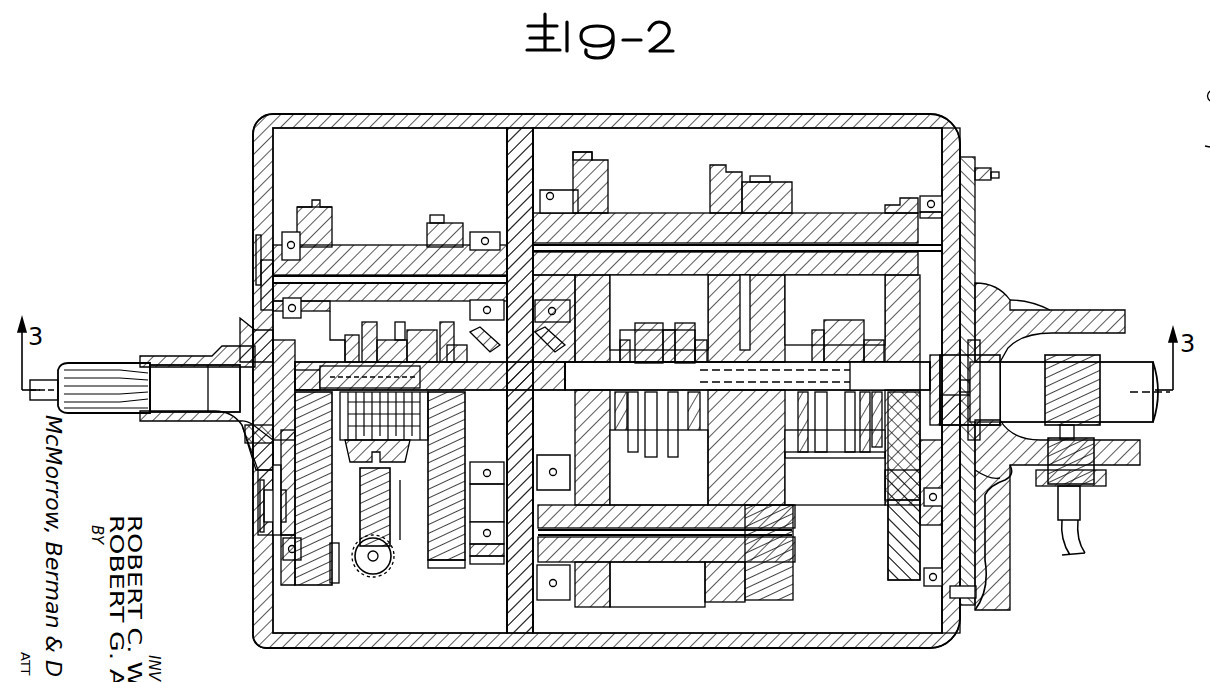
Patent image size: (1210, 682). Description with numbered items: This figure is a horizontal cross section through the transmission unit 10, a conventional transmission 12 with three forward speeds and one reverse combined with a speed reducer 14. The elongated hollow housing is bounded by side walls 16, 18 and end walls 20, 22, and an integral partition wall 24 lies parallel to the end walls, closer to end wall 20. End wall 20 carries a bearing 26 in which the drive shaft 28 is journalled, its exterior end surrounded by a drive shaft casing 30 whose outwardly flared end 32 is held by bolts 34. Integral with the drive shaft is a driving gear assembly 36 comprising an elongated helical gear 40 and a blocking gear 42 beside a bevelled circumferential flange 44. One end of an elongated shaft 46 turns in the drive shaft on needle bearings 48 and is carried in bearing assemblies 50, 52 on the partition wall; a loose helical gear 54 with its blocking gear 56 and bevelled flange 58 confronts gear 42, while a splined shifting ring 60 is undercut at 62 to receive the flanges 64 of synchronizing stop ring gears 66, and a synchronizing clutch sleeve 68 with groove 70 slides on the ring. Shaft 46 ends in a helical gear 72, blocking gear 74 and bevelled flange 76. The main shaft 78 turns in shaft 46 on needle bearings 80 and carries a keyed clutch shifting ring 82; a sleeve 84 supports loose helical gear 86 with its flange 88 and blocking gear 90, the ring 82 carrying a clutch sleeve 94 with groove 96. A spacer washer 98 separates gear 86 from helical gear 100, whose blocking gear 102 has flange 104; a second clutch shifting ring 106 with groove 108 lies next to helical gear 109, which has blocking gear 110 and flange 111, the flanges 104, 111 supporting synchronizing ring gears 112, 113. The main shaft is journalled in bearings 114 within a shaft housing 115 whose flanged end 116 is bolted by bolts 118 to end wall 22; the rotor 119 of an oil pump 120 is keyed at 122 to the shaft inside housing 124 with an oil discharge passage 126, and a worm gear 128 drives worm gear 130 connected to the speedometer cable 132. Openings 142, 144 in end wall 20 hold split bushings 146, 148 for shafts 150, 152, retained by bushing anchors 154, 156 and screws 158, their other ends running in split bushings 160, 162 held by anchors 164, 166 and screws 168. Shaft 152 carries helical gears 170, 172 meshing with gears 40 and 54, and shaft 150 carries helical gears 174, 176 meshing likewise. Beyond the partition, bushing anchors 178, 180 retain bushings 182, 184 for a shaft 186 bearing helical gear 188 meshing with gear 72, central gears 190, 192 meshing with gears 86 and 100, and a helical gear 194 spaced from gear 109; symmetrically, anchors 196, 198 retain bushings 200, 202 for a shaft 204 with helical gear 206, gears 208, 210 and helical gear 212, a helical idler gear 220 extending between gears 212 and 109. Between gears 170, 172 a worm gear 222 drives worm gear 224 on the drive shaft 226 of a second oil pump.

The transmission unit 10 is at (893, 114).
The conventional transmission 12 is at (630, 308).
The speed reducer 14 is at (410, 550).
The side wall 16 is at (716, 114).
The side wall 18 is at (637, 106).
The end wall 20 is at (255, 190).
The end wall 22 is at (956, 225).
The partition wall 24 is at (507, 150).
The bearing 26 is at (240, 448).
The drive shaft 28 is at (194, 395).
The drive shaft casing 30 is at (184, 358).
The outwardly flared end 32 is at (250, 326).
The bolts 34 is at (258, 478).
The driving gear assembly 36 is at (248, 432).
The elongated helical gear 40 is at (300, 402).
The blocking gear 42 is at (340, 350).
The bevelled circumferential flange 44 is at (352, 337).
The elongated shaft 46 is at (430, 376).
The needle bearings 48 is at (300, 378).
The bearing assembly 50 is at (492, 338).
The bearing assembly 52 is at (546, 342).
The helical gear 54 is at (458, 348).
The blocking gear 56 is at (400, 436).
The bevelled flange 58 is at (415, 378).
The shifting ring 60 is at (425, 465).
The undercut 62 is at (392, 340).
The flanges 64 is at (425, 330).
The synchronizing stop ring gears 66 is at (368, 322).
The synchronizing clutch sleeve 68 is at (348, 460).
The circumferential groove 70 is at (400, 322).
The helical gear 72 is at (628, 452).
The blocking gear 74 is at (652, 455).
The bevelled circumferential flange 76 is at (624, 342).
The main shaft 78 is at (1142, 336).
The needle bearings 80 is at (592, 390).
The clutch shifting ring 82 is at (700, 340).
The sleeve 84 is at (726, 318).
The helical gear 86 is at (708, 480).
The bevelled flange 88 is at (671, 312).
The blocking gear 90 is at (640, 323).
The clutch sleeve 94 is at (668, 330).
The circumferential groove 96 is at (680, 325).
The spacer washer 98 is at (785, 488).
The helical gear 100 is at (812, 330).
The blocking gear 102 is at (820, 332).
The bevelled flange 104 is at (842, 322).
The clutch shifting ring 106 is at (832, 452).
The circumferential groove 108 is at (935, 498).
The helical gear 109 is at (875, 340).
The blocking gear 110 is at (868, 452).
The bevelled flange 111 is at (868, 370).
The synchronizing ring gear 112 is at (808, 450).
The synchronizing ring gear 113 is at (878, 450).
The bearings 114 is at (990, 412).
The shaft housing 115 is at (1060, 310).
The flanged end 116 is at (970, 245).
The bolts 118 is at (991, 175).
The rotor 119 is at (985, 372).
The oil pump 120 is at (1013, 312).
The key 122 is at (962, 388).
The pump housing 124 is at (1000, 490).
The oil discharge passage 126 is at (988, 500).
The worm gear 128 is at (1090, 348).
The worm gear 130 is at (1080, 390).
The speedometer cable 132 is at (1074, 432).
The opening 142 is at (257, 252).
The opening 144 is at (264, 508).
The split bushing 146 is at (262, 276).
The split bushing 148 is at (260, 518).
The shaft 150 is at (340, 245).
The shaft 152 is at (338, 548).
The bushing anchor 154 is at (283, 238).
The bushing anchor 156 is at (280, 540).
The screws 158 is at (284, 308).
The split bushing 160 is at (488, 232).
The split bushing 162 is at (482, 514).
The bushing anchor 164 is at (450, 223).
The bushing anchor 166 is at (476, 556).
The screws 168 is at (490, 570).
The helical gear 170 is at (292, 585).
The helical gear 172 is at (455, 570).
The helical gear 174 is at (325, 207).
The helical gear 176 is at (428, 226).
The bushing anchor 178 is at (555, 190).
The bushing anchor 180 is at (932, 196).
The bushing 182 is at (578, 213).
The bushing 184 is at (737, 246).
The shaft 186 is at (683, 222).
The helical gear 188 is at (598, 165).
The gear 190 is at (735, 175).
The gear 192 is at (788, 186).
The helical gear 194 is at (910, 205).
The bushing anchor 196 is at (556, 600).
The bushing anchor 198 is at (930, 586).
The bushing 200 is at (570, 505).
The bushing 202 is at (892, 572).
The shaft 204 is at (660, 562).
The helical gear 206 is at (608, 600).
The gear 208 is at (710, 600).
The gear 210 is at (782, 600).
The helical gear 212 is at (888, 541).
The helical idler gear 220 is at (888, 505).
The worm gear 222 is at (390, 538).
The worm gear 224 is at (388, 574).
The drive shaft 226 is at (368, 575).